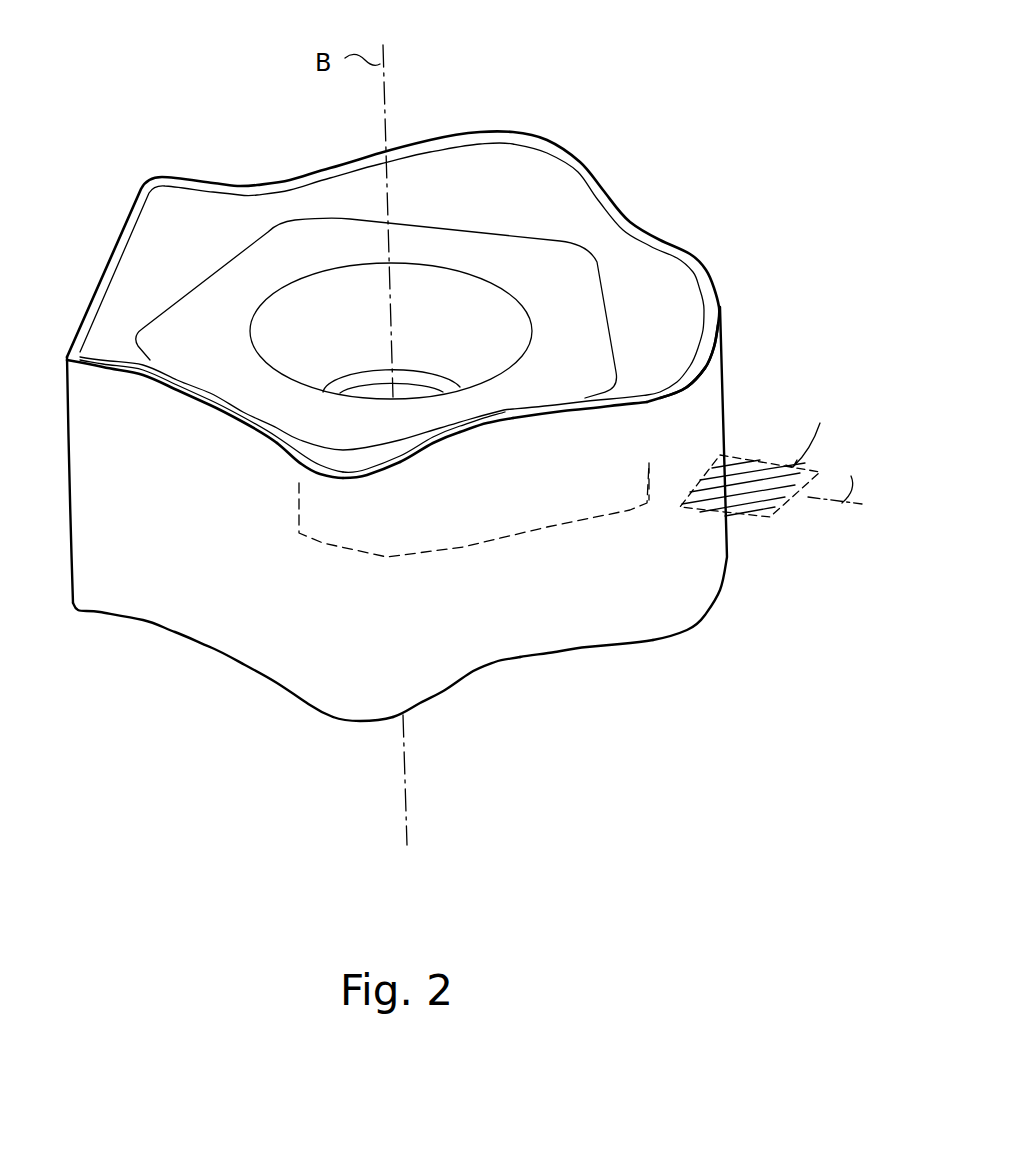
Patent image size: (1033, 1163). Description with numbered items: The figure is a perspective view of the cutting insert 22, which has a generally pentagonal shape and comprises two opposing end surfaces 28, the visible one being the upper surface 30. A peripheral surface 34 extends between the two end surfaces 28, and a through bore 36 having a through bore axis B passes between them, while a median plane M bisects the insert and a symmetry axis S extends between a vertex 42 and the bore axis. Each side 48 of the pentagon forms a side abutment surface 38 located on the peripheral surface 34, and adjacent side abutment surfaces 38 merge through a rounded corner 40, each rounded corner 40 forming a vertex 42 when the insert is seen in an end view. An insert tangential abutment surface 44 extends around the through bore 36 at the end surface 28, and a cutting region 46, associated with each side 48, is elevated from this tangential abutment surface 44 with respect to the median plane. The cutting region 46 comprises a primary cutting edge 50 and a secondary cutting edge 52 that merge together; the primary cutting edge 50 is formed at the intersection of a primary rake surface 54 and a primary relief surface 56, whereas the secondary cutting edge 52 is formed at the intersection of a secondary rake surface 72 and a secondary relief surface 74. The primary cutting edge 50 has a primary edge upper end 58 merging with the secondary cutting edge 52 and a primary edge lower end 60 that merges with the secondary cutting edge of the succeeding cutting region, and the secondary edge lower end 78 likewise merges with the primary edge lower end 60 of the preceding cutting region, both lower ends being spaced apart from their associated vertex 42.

The cutting insert 22 is at (632, 93).
The end surfaces 28 is at (457, 174).
The upper surface 30 is at (197, 212).
The peripheral surface 34 is at (668, 558).
The through bore 36 is at (330, 293).
The side abutment surface 38 is at (237, 581).
The rounded corner 40 is at (347, 674).
The vertex 42 is at (710, 361).
The insert tangential abutment surface 44 is at (273, 252).
The cutting region 46 is at (450, 552).
The side 48 is at (187, 587).
The primary cutting edge 50 is at (568, 418).
The secondary cutting edge 52 is at (458, 438).
The primary rake surface 54 is at (208, 394).
The primary relief surface 56 is at (188, 421).
The primary edge upper end 58 is at (487, 420).
The primary edge lower end 60 is at (647, 407).
The secondary rake surface 72 is at (406, 445).
The secondary relief surface 74 is at (435, 454).
The secondary edge lower end 78 is at (297, 470).